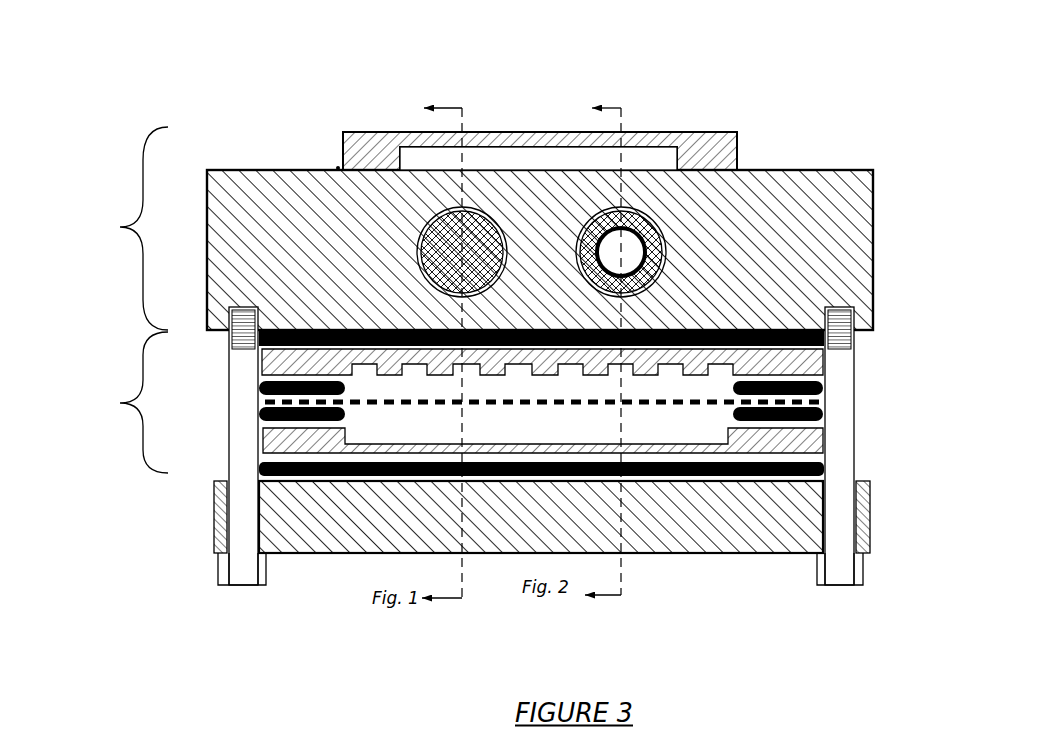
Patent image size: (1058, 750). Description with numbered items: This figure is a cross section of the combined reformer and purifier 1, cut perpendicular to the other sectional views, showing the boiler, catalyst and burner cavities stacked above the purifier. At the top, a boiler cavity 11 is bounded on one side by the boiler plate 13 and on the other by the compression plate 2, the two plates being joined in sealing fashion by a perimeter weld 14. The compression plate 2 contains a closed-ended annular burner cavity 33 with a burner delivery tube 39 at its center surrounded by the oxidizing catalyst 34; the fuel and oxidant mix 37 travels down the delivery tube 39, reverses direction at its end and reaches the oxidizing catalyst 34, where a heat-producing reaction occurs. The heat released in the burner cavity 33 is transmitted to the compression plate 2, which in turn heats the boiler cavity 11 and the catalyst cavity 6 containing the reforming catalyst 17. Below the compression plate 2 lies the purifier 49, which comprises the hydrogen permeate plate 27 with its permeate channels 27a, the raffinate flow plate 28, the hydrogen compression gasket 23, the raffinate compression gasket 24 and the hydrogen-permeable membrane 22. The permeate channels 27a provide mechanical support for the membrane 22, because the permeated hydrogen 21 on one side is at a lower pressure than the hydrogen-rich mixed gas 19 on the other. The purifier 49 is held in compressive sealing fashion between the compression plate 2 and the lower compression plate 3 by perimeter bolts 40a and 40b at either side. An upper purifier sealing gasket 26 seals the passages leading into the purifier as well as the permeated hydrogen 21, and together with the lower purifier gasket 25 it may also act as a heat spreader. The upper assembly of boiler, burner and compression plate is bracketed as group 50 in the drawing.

The combined reformer and purifier 1 is at (206, 172).
The compression plate 2 is at (547, 320).
The lower compression plate 3 is at (584, 526).
The catalyst cavity 6 is at (425, 213).
The boiler cavity 11 is at (526, 170).
The boiler plate 13 is at (480, 128).
The perimeter weld 14 is at (337, 166).
The reforming catalyst 17 is at (468, 262).
The hydrogen-rich mixed gas 19 is at (588, 430).
The permeated hydrogen 21 is at (588, 398).
The hydrogen-permeable membrane 22 is at (413, 410).
The hydrogen compression gasket 23 is at (822, 388).
The raffinate compression gasket 24 is at (262, 557).
The lower purifier gasket 25 is at (370, 480).
The upper purifier sealing gasket 26 is at (463, 349).
The hydrogen permeate plate 27 is at (547, 378).
The permeate channels 27a is at (718, 378).
The raffinate flow plate 28 is at (648, 450).
The burner cavity 33 is at (585, 252).
The oxidizing catalyst 34 is at (587, 212).
The fuel and oxidant mix 37 is at (610, 262).
The burner delivery tube 39 is at (648, 252).
The perimeter bolt 40a is at (228, 410).
The perimeter bolt 40b is at (856, 435).
The purifier 49 is at (117, 403).
The upper assembly 50 is at (117, 227).